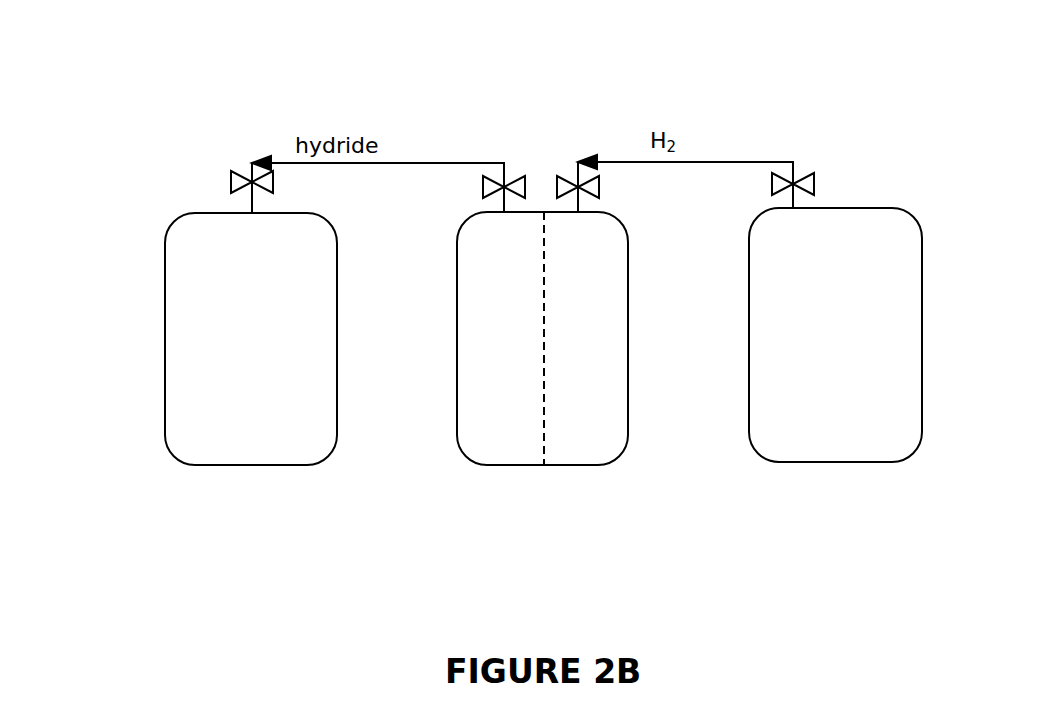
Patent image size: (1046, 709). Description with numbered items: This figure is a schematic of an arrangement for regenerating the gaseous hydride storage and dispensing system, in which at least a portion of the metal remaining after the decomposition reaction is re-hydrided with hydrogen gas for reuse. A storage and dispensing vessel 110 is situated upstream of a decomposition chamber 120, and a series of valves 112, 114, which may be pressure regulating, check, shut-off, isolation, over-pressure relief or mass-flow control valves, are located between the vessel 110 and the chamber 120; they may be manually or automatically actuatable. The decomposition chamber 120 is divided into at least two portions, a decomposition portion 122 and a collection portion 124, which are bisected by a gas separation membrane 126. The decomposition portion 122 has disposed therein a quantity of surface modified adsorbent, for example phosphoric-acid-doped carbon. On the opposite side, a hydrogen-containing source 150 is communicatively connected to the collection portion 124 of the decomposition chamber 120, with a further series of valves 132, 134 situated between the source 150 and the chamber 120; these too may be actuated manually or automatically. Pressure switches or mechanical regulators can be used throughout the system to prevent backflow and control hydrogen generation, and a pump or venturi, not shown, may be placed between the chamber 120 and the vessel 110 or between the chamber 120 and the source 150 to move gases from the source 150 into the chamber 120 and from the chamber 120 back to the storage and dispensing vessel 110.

The storage and dispensing vessel 110 is at (205, 291).
The valve 112 is at (245, 177).
The valve 114 is at (482, 183).
The decomposition chamber 120 is at (556, 368).
The decomposition portion 122 is at (480, 387).
The collection portion 124 is at (607, 372).
The gas separation membrane 126 is at (544, 412).
The valve 132 is at (598, 190).
The valve 134 is at (803, 175).
The hydrogen-containing source 150 is at (825, 405).